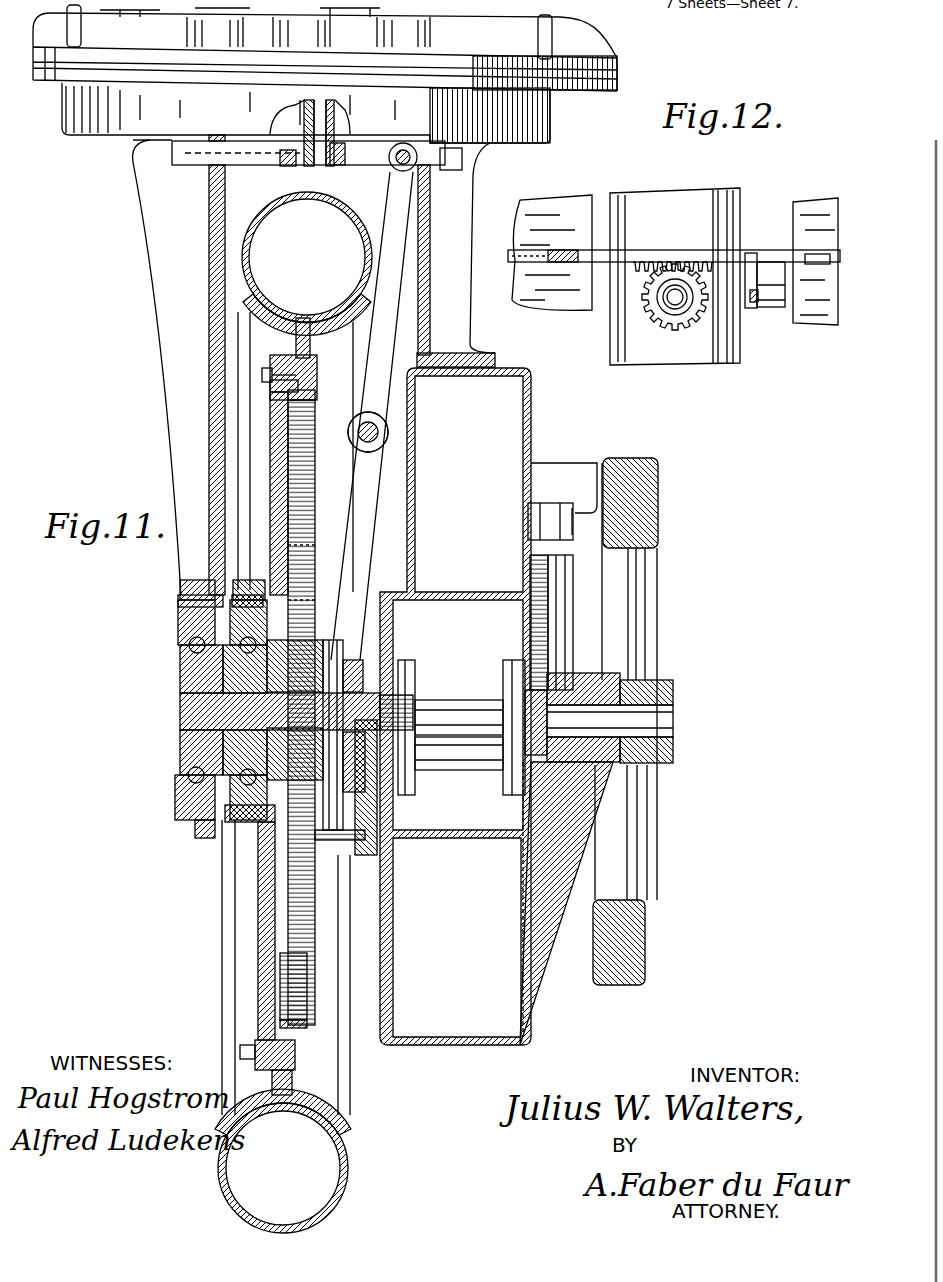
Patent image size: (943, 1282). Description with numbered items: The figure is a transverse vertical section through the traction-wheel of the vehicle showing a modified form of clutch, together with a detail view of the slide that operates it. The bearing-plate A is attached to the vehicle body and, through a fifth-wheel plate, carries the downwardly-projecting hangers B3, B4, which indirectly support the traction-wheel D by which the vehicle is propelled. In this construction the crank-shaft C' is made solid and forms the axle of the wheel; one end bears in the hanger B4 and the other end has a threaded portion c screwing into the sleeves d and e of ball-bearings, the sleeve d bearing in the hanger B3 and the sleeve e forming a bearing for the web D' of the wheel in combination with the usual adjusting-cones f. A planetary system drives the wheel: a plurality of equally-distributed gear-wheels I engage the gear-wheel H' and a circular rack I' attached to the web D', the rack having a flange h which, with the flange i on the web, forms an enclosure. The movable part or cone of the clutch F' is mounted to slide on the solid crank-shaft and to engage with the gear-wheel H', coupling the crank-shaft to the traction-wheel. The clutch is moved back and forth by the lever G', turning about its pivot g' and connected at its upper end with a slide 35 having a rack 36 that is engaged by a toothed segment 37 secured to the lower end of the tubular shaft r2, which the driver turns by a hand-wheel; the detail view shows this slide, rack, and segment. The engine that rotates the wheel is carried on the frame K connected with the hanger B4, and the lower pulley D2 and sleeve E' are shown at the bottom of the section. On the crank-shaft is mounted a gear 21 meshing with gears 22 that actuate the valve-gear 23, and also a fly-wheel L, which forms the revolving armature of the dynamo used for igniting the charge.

In FIG. 11, the bearing-plate A is at (152, 42).
In FIG. 11, the hanger B3 is at (289, 371).
In FIG. 11, the hanger B4 is at (424, 367).
In FIG. 11, the traction-wheel D is at (301, 252).
In FIG. 11, the web D' is at (237, 487).
In FIG. 11, the lower pulley D2 is at (283, 1019).
In FIG. 11, the flange h is at (318, 322).
In FIG. 11, the flange i is at (290, 330).
In FIG. 11, the gear-wheels I is at (305, 709).
In FIG. 11, the circular rack I' is at (307, 986).
In FIG. 11, the lever G' is at (372, 416).
In FIG. 12, the lever G' is at (765, 303).
In FIG. 11, the pivot g' is at (353, 432).
In FIG. 11, the slide 35 is at (373, 160).
In FIG. 12, the slide 35 is at (660, 256).
In FIG. 11, the rack 36 is at (285, 164).
In FIG. 12, the rack 36 is at (648, 268).
In FIG. 11, the toothed segment 37 is at (330, 158).
In FIG. 12, the toothed segment 37 is at (668, 318).
In FIG. 11, the tubular shaft r2 is at (318, 165).
In FIG. 12, the tubular shaft r2 is at (668, 302).
In FIG. 11, the threaded portion c is at (188, 735).
In FIG. 11, the sleeve d is at (188, 668).
In FIG. 11, the sleeve e is at (240, 752).
In FIG. 11, the adjusting-cones f is at (180, 625).
In FIG. 11, the clutch cone F' is at (295, 710).
In FIG. 11, the sleeve E' is at (340, 740).
In FIG. 11, the gear-wheel H' is at (387, 729).
In FIG. 11, the crank C' is at (472, 733).
In FIG. 11, the frame K is at (488, 706).
In FIG. 11, the fly-wheel L is at (655, 503).
In FIG. 11, the gear 21 is at (538, 762).
In FIG. 11, the gears 22 is at (542, 672).
In FIG. 11, the valve-gear 23 is at (553, 586).